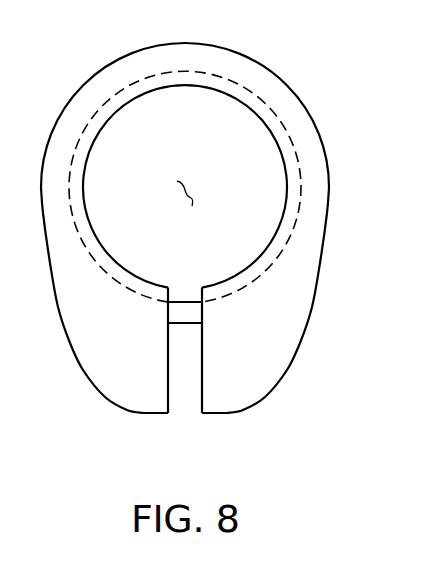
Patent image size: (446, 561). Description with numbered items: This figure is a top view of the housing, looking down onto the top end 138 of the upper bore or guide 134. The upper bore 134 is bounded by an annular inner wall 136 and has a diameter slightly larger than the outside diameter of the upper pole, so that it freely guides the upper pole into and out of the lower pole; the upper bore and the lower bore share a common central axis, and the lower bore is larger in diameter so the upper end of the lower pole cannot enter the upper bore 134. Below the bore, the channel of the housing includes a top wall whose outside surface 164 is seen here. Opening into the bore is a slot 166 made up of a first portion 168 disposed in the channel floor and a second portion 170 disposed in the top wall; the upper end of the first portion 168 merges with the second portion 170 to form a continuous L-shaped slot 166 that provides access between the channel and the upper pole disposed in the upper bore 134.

The top end 138 is at (230, 62).
The upper bore 134 is at (190, 185).
The annular inner wall 136 is at (287, 183).
The first portion of slot 168 is at (185, 301).
The slot 166 is at (185, 358).
The outside surface 164 is at (154, 392).
The second portion of slot 170 is at (183, 403).